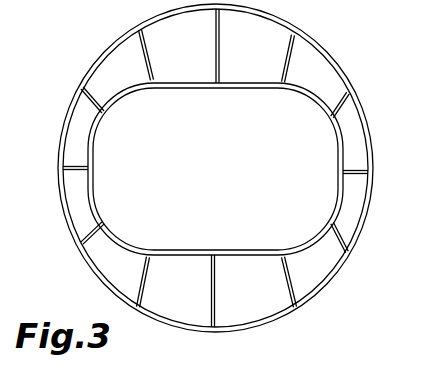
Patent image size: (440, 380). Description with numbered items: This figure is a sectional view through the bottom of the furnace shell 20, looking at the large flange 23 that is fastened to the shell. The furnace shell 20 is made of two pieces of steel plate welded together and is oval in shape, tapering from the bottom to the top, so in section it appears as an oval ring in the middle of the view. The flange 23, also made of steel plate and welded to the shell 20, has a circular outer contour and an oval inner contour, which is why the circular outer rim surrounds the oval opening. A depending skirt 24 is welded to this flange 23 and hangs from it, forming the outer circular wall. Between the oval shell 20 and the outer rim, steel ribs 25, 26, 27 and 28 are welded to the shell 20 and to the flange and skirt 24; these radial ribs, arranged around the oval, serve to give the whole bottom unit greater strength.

The furnace shell 20 is at (337, 143).
The flange 23 is at (244, 64).
The depending skirt 24 is at (104, 277).
The steel rib 25 is at (216, 42).
The steel rib 26 is at (151, 57).
The steel rib 27 is at (93, 100).
The steel rib 28 is at (72, 165).